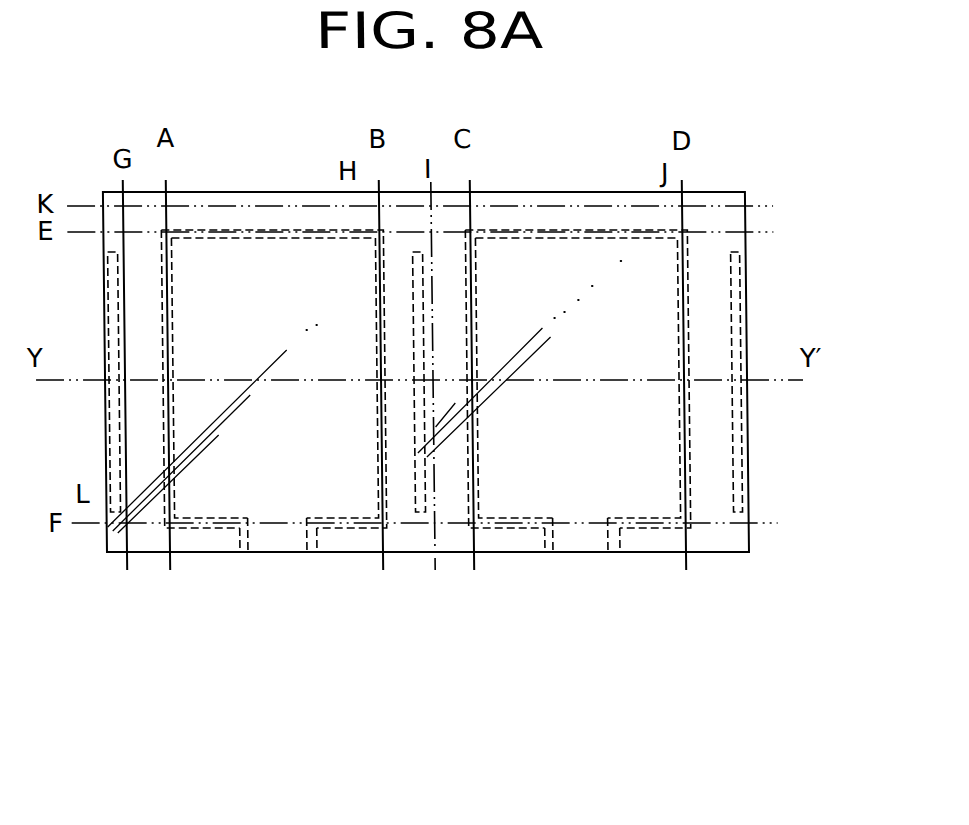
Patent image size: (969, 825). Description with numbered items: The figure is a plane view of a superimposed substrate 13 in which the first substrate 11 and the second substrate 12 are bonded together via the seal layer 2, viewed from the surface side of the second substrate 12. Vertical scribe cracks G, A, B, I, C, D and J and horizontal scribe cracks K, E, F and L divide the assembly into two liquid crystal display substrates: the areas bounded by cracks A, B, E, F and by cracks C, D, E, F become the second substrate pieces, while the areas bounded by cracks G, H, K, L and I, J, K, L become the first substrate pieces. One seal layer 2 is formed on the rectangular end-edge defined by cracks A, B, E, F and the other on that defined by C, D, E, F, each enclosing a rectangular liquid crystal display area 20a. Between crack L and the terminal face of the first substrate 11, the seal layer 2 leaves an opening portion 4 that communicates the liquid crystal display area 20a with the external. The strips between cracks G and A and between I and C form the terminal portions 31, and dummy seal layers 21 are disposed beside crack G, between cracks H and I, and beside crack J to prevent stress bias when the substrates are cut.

The seal layer 2 is at (234, 540).
The opening portion 4 is at (276, 533).
The first substrate 11 is at (238, 218).
The second substrate 12 is at (292, 218).
The superimposed substrate 13 is at (568, 166).
The liquid crystal display area 20a is at (179, 313).
The dummy seal layer 21 is at (111, 275).
The terminal portion 31 is at (448, 248).